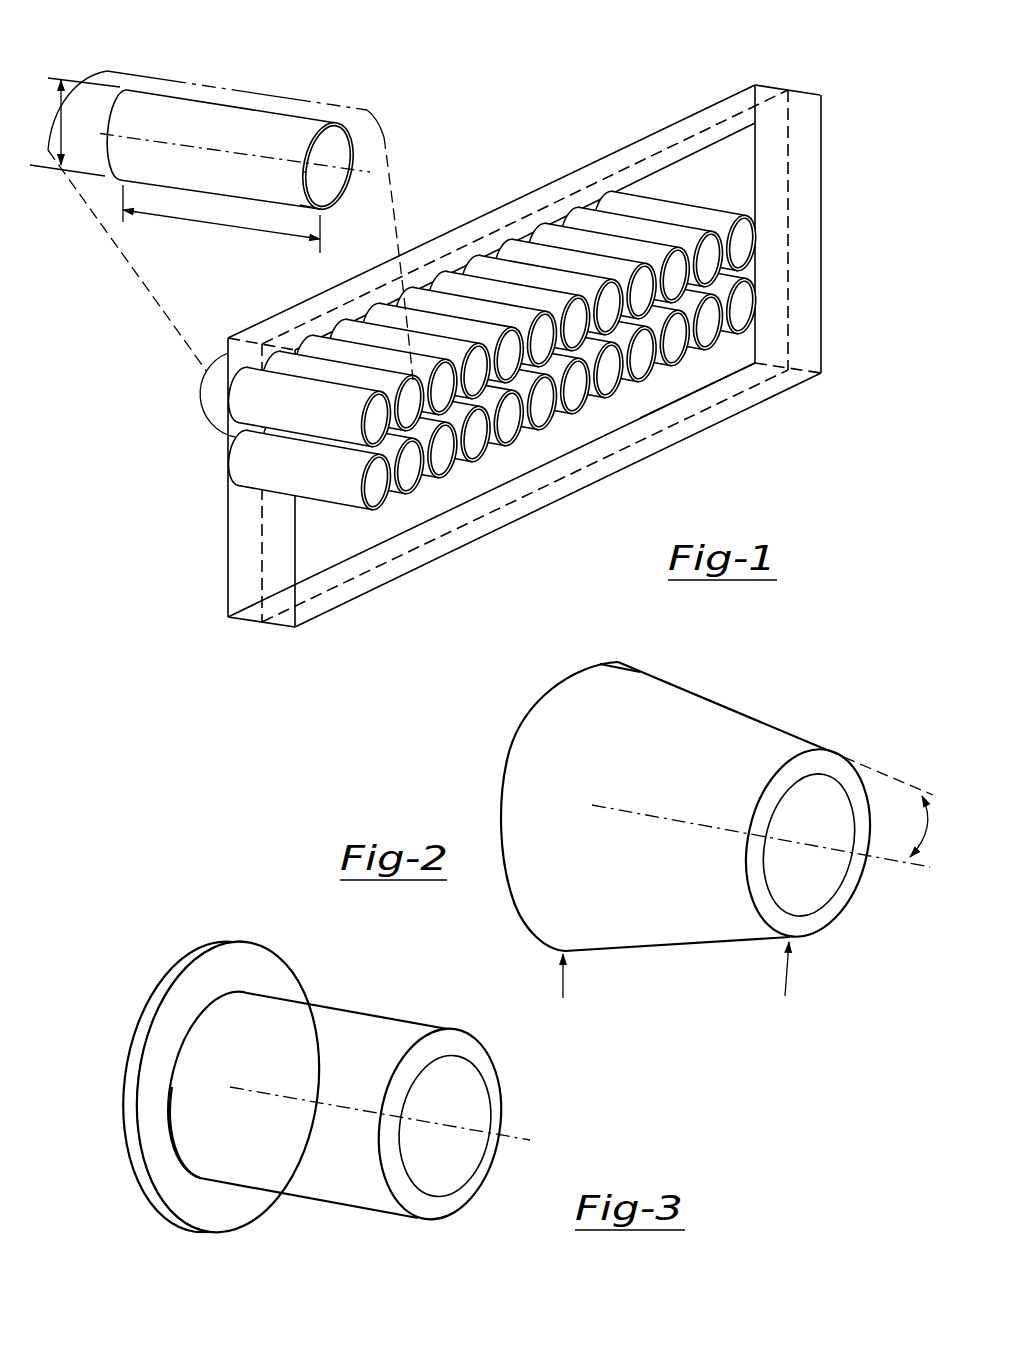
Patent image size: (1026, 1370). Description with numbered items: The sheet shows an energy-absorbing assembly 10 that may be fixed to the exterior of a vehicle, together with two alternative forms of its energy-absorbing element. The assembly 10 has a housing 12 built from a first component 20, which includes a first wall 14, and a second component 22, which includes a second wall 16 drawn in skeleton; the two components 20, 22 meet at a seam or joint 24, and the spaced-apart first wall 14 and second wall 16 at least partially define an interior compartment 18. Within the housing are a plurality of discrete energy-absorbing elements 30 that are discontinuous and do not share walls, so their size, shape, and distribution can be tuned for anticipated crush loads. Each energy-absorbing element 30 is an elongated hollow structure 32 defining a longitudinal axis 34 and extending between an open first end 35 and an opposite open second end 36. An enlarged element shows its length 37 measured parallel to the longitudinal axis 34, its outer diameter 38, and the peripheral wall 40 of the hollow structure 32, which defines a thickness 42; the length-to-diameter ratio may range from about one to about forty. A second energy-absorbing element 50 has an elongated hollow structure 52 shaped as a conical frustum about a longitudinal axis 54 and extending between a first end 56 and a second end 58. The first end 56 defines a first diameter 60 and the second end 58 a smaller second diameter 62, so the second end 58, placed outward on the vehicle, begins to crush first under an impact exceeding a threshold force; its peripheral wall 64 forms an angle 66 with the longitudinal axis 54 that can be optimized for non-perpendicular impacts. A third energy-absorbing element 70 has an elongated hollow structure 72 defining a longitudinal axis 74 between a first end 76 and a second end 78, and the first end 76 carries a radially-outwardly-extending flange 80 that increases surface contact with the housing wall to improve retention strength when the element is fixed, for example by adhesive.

In FIG. 1, the energy-absorbing assembly 10 is at (810, 58).
In FIG. 1, the housing 12 is at (824, 139).
In FIG. 1, the first wall 14 is at (612, 156).
In FIG. 1, the second wall 16 is at (690, 157).
In FIG. 1, the interior compartment 18 is at (708, 372).
In FIG. 1, the first component 20 is at (227, 624).
In FIG. 1, the second component 22 is at (266, 636).
In FIG. 1, the seam or joint 24 is at (348, 583).
In FIG. 1, the energy-absorbing element 30 is at (530, 252).
In FIG. 1, the elongated hollow structure 32 is at (335, 125).
In FIG. 1, the longitudinal axis 34 is at (349, 177).
In FIG. 1, the first end 35 is at (112, 97).
In FIG. 1, the second end 36 is at (354, 139).
In FIG. 1, the length 37 is at (220, 228).
In FIG. 1, the diameter 38 is at (58, 78).
In FIG. 1, the peripheral wall 40 is at (323, 212).
In FIG. 1, the thickness 42 is at (366, 175).
In FIG. 2, the energy-absorbing element 50 is at (507, 732).
In FIG. 2, the elongated hollow structure 52 is at (677, 705).
In FIG. 2, the longitudinal axis 54 is at (680, 820).
In FIG. 2, the first end 56 is at (500, 784).
In FIG. 2, the second end 58 is at (816, 937).
In FIG. 2, the first diameter 60 is at (619, 658).
In FIG. 2, the second diameter 62 is at (829, 748).
In FIG. 2, the peripheral wall 64 is at (832, 905).
In FIG. 2, the angle 66 is at (920, 822).
In FIG. 3, the energy-absorbing element 70 is at (392, 963).
In FIG. 3, the elongated hollow structure 72 is at (390, 1037).
In FIG. 3, the longitudinal axis 74 is at (318, 1102).
In FIG. 3, the first end 76 is at (136, 1194).
In FIG. 3, the second end 78 is at (481, 1195).
In FIG. 3, the radially-outwardly-extending flange 80 is at (247, 972).